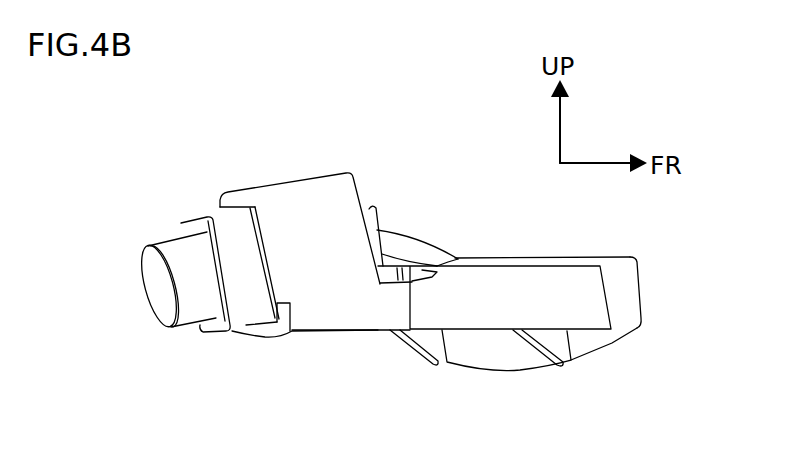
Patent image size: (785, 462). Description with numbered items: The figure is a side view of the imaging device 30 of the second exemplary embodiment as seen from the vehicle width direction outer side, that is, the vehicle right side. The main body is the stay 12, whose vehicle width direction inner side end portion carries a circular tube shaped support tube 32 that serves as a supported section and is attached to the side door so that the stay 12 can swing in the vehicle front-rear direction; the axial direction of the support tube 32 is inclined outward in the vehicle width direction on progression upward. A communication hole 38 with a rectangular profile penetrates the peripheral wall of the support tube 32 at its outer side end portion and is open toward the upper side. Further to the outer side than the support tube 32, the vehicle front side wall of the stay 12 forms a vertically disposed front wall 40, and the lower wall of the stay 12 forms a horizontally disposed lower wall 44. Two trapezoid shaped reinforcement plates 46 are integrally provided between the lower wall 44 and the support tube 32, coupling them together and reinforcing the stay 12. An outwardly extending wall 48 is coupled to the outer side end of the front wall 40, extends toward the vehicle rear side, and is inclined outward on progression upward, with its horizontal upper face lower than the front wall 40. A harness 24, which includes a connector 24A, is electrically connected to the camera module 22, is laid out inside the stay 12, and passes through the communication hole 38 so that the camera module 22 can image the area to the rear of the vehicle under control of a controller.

The stay 12 is at (646, 289).
The camera module 22 is at (270, 178).
The harness 24 is at (410, 233).
The connector 24A is at (373, 213).
The imaging device 30 is at (160, 175).
The support tube 32 is at (640, 329).
The communication hole 38 is at (568, 259).
The front wall 40 is at (500, 280).
The lower wall 44 is at (487, 331).
The reinforcement plates 46 is at (403, 348).
The outwardly extending wall 48 is at (387, 308).